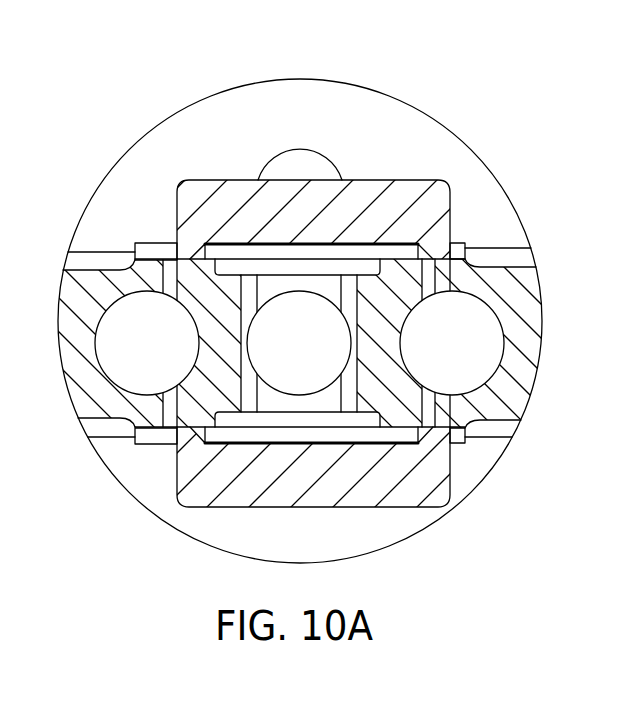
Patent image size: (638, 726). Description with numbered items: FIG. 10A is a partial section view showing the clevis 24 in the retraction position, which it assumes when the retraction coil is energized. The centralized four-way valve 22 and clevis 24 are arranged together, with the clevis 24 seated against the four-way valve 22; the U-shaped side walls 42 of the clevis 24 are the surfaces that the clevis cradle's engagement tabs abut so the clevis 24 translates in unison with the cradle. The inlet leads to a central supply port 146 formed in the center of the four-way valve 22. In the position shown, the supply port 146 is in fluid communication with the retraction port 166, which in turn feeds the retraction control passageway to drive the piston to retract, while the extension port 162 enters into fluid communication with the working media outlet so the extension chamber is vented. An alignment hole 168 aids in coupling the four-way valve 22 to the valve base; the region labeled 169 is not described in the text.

The four-way valve 22 is at (433, 111).
The clevis 24 is at (452, 178).
The U-shaped side walls 42 is at (175, 215).
The central supply port 146 is at (280, 359).
The extension port 162 is at (128, 359).
The retraction port 166 is at (433, 359).
The alignment hole 168 is at (299, 160).
The cavity 169 is at (228, 146).